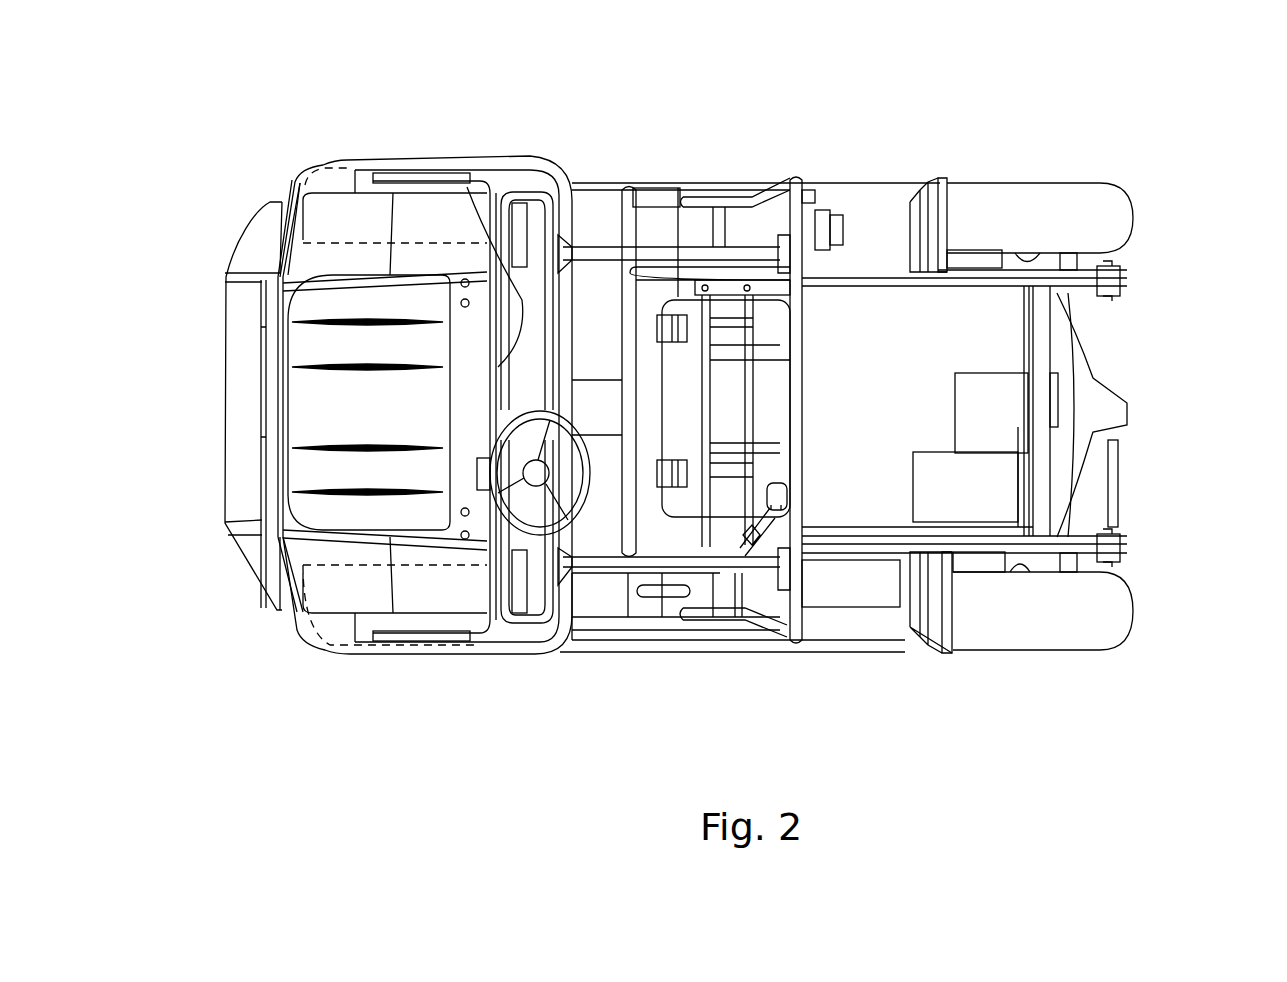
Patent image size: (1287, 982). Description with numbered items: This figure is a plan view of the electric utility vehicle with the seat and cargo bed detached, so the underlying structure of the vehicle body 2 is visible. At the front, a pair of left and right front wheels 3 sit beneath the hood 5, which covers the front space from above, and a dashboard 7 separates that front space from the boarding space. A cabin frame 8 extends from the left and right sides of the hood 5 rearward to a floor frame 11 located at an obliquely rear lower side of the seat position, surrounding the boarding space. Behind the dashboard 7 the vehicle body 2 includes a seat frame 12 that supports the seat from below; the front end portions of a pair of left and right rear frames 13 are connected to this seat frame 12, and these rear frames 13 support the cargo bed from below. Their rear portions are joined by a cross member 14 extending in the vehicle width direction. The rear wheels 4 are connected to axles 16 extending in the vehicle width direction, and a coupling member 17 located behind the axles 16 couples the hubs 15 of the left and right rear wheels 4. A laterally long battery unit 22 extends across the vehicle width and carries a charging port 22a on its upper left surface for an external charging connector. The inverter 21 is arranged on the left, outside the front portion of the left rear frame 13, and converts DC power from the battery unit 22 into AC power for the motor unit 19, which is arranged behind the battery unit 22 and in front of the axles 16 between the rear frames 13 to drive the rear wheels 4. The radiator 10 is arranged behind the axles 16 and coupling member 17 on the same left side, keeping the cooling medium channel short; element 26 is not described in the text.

The vehicle body 2 is at (570, 648).
The front wheels 3 is at (345, 160).
The rear wheels 4 is at (1120, 222).
The hood 5 is at (305, 407).
The dashboard 7 is at (462, 272).
The cabin frame 8 is at (590, 257).
The radiator 10 is at (1125, 487).
The floor frame 11 is at (625, 648).
The seat frame 12 is at (630, 303).
The rear frames 13 is at (1077, 268).
The cross member 14 is at (1052, 620).
The hubs 15 is at (1017, 250).
The axles 16 is at (1040, 340).
The coupling member 17 is at (1057, 312).
The motor unit 19 is at (968, 620).
The inverter 21 is at (853, 597).
The battery unit 22 is at (678, 300).
The charging port 22a is at (770, 487).
The rear support 26 is at (1017, 400).